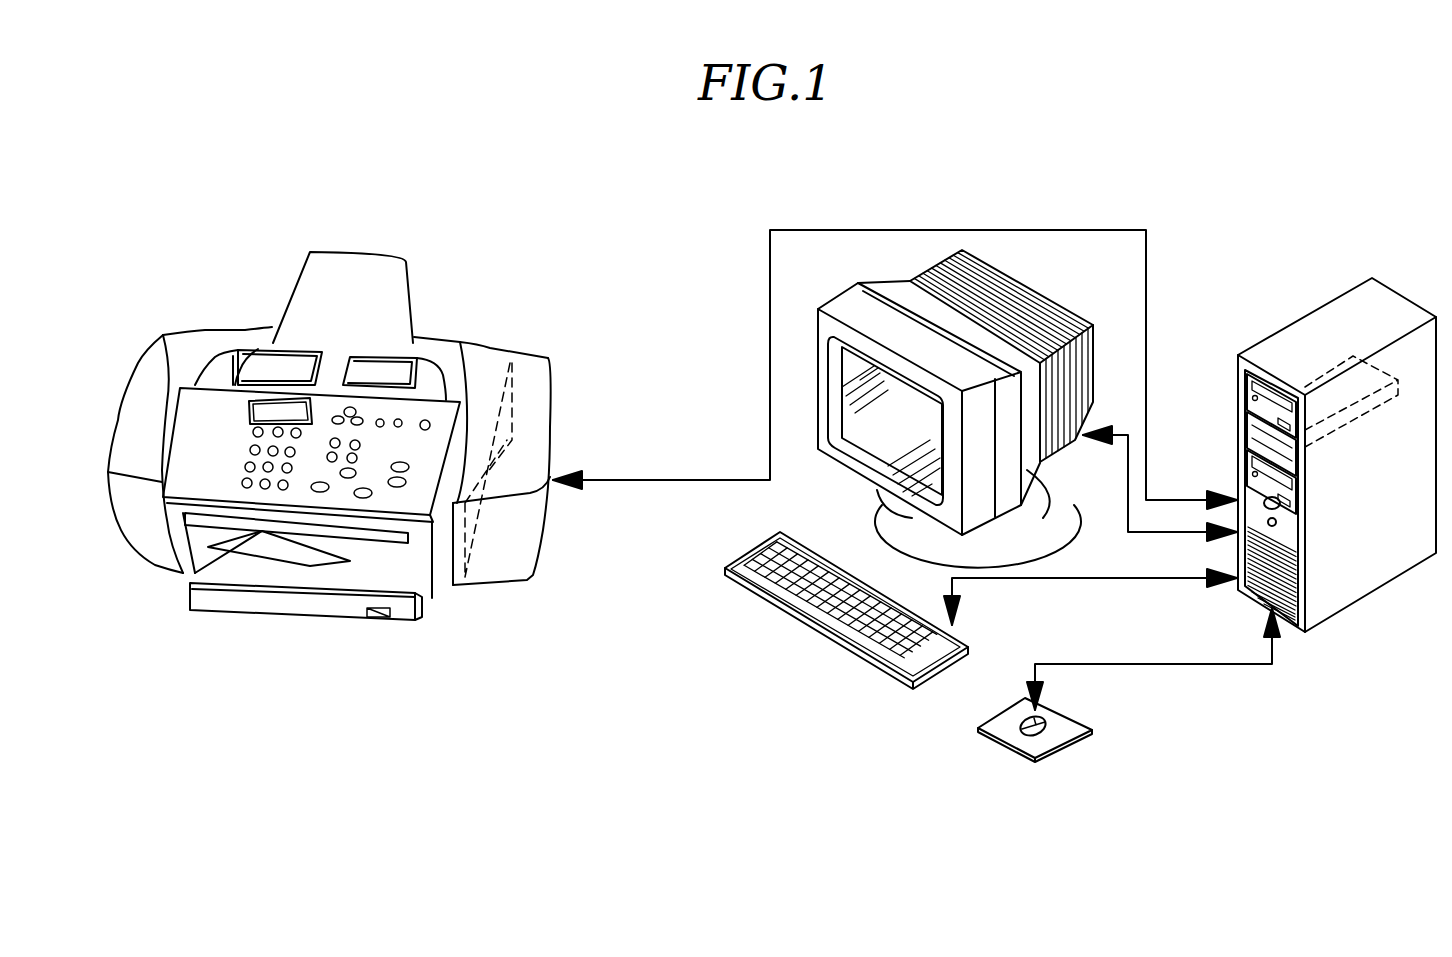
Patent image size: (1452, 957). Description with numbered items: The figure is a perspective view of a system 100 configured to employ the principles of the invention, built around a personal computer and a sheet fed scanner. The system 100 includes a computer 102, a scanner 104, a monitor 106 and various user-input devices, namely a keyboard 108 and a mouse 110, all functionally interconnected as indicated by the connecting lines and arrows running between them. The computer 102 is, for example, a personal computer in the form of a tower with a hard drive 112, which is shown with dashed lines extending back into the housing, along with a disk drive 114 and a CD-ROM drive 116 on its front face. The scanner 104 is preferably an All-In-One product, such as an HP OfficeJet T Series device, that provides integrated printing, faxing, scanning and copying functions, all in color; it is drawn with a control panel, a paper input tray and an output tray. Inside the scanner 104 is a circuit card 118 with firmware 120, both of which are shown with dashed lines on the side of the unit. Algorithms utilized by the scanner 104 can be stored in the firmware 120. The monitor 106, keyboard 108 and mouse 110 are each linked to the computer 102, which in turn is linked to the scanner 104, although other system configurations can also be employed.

The system 100 is at (597, 659).
The computer 102 is at (1295, 424).
The scanner 104 is at (391, 411).
The monitor 106 is at (835, 490).
The keyboard 108 is at (823, 630).
The mouse 110 is at (1022, 728).
The hard drive 112 is at (1255, 423).
The disk drive 114 is at (1255, 448).
The CD-ROM drive 116 is at (1255, 385).
The circuit card 118 is at (533, 477).
The firmware 120 is at (507, 415).